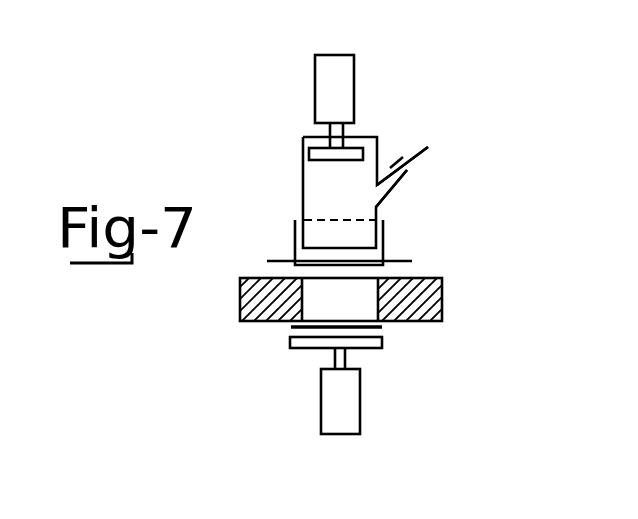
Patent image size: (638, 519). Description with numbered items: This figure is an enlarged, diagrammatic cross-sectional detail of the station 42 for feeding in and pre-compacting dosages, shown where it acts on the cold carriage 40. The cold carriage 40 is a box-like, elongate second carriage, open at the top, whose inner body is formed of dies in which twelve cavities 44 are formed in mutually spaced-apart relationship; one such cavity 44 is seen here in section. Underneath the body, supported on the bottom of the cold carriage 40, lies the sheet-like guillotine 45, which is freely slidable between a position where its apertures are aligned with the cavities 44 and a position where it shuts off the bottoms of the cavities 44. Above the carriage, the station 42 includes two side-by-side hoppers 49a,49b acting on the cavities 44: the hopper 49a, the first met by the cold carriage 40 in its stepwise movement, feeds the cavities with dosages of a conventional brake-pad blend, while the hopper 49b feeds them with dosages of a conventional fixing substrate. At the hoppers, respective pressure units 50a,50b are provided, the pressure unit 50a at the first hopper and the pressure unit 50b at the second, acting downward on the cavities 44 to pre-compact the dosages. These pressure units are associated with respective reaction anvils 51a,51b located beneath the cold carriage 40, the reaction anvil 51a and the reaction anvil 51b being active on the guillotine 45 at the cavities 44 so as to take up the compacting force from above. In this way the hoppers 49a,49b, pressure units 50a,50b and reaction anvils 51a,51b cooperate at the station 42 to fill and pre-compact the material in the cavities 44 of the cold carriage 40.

The cold carriage 40 is at (450, 303).
The station for feeding in and pre-compacting dosages 42 is at (258, 163).
The cavity 44 is at (357, 311).
The guillotine 45 is at (383, 328).
The hopper 49a is at (454, 177).
The hopper 49b is at (398, 181).
The hoppers 49a,49b is at (454, 177).
The pressure unit 50a is at (403, 71).
The pressure unit 50b is at (363, 75).
The pressure units 50a,50b is at (403, 71).
The reaction anvil 51a is at (287, 388).
The reaction anvil 51b is at (314, 381).
The reaction anvils 51a,51b is at (287, 388).